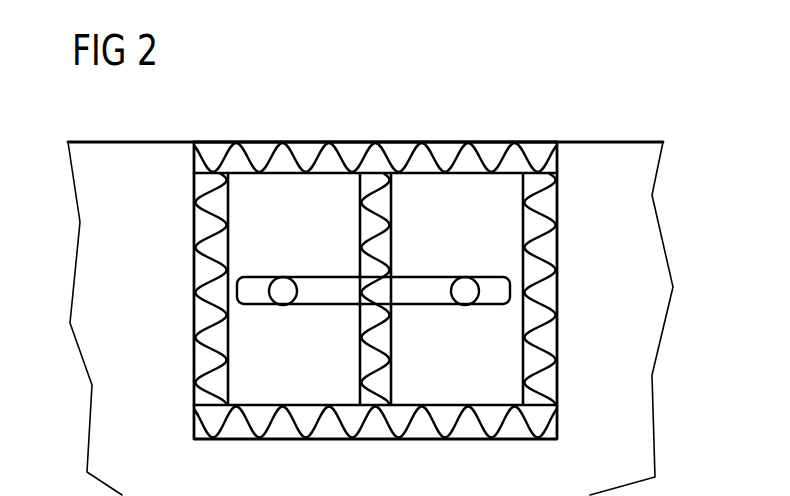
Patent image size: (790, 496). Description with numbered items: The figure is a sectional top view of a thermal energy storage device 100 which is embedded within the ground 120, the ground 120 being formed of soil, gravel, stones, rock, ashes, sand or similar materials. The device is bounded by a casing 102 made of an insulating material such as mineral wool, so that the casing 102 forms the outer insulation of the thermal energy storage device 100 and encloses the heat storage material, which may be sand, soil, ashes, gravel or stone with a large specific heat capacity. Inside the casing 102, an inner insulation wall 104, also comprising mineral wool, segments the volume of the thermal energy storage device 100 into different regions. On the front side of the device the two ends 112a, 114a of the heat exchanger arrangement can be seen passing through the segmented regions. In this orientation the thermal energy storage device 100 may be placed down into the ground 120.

The thermal energy storage device 100 is at (590, 122).
The casing 102 is at (558, 197).
The inner insulation walls 104 is at (393, 197).
The end of the heat exchanger arrangement 112a is at (465, 295).
The end of the heat exchanger arrangement 114a is at (283, 295).
The ground 120 is at (164, 154).